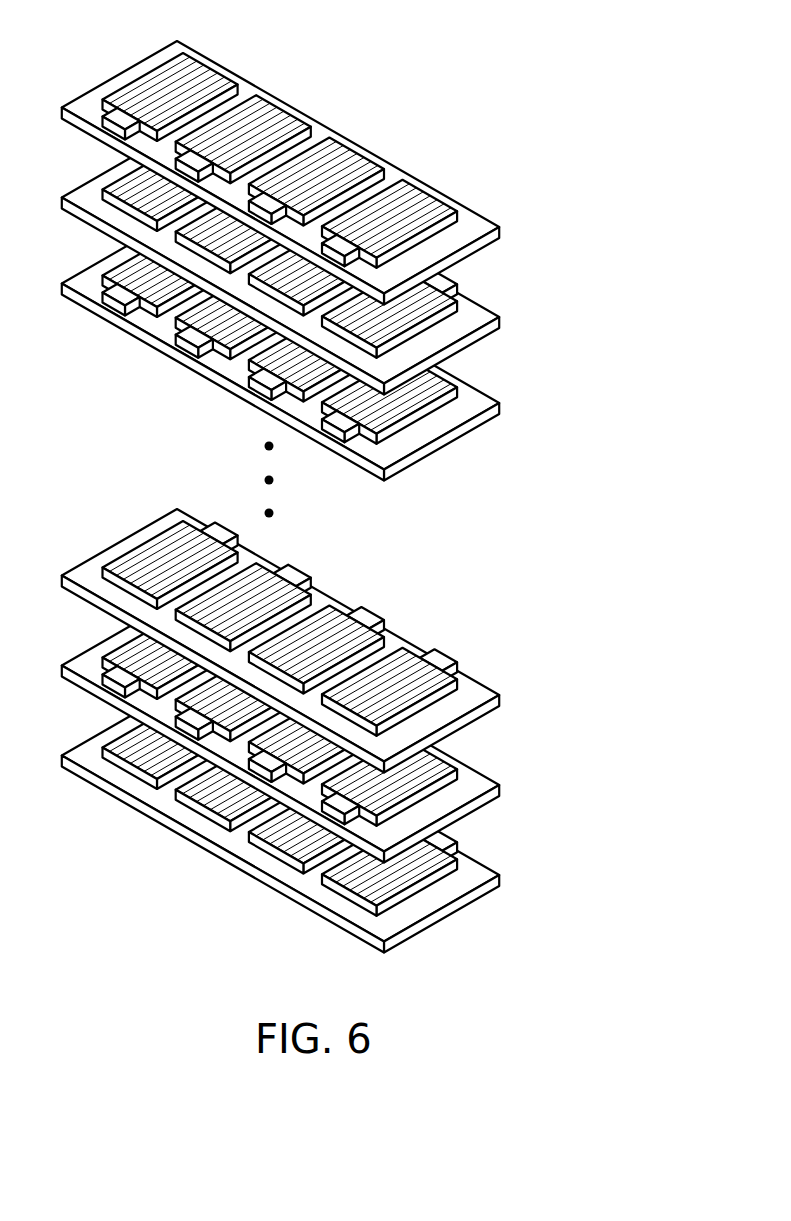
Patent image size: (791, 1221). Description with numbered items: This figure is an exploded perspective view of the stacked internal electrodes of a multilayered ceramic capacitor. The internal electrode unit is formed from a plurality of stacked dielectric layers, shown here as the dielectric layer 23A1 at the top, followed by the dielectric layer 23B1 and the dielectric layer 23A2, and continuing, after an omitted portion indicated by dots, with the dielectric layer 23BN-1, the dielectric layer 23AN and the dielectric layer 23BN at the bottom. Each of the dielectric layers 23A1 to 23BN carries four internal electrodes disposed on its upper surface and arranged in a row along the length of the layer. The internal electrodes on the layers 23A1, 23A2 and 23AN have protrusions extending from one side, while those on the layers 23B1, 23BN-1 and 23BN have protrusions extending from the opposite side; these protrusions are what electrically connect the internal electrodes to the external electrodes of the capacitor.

The dielectric layer 23A1 is at (346, 177).
The dielectric layer 23B1 is at (346, 266).
The dielectric layer 23A2 is at (346, 355).
The dielectric layer 23BN-1 is at (362, 646).
The dielectric layer 23AN is at (348, 736).
The dielectric layer 23BN is at (348, 824).